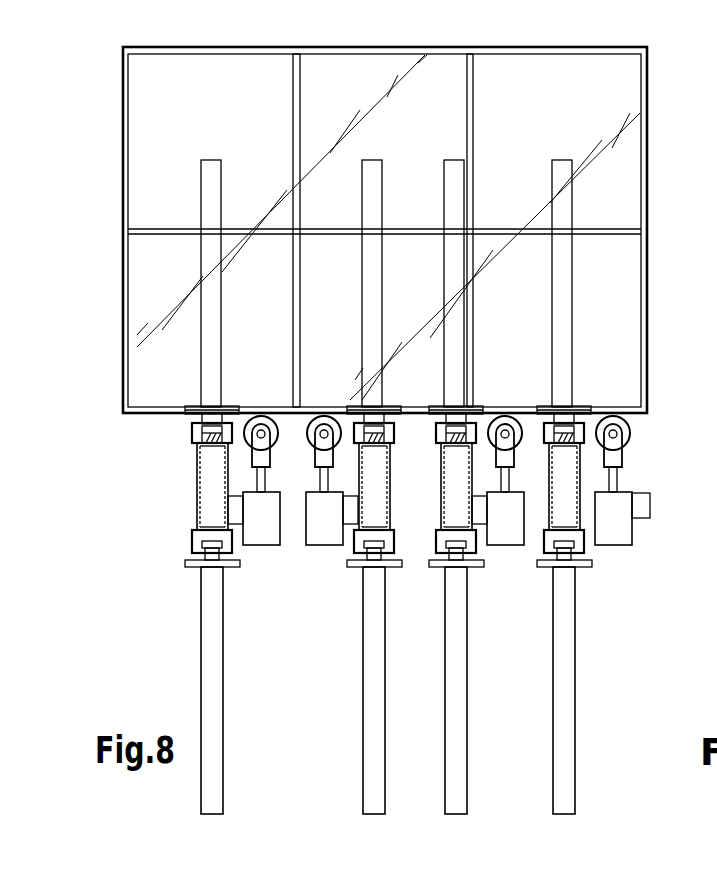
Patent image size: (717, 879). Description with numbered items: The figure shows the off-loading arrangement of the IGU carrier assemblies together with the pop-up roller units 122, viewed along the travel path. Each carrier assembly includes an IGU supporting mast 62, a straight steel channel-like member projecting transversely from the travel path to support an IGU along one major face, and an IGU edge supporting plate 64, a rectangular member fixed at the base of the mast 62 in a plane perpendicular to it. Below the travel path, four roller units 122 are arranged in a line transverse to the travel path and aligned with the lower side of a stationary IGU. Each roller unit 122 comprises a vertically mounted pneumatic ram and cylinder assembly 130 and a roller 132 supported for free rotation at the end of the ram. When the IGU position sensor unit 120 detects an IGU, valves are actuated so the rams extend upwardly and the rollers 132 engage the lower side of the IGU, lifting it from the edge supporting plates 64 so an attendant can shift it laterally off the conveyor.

The IGU supporting mast 62 is at (567, 275).
The IGU edge supporting plate 64 is at (193, 407).
The IGU position sensor unit 120 is at (645, 507).
The pop-up roller unit 122 is at (651, 518).
The pneumatic ram and cylinder assembly 130 is at (620, 500).
The roller 132 is at (628, 430).